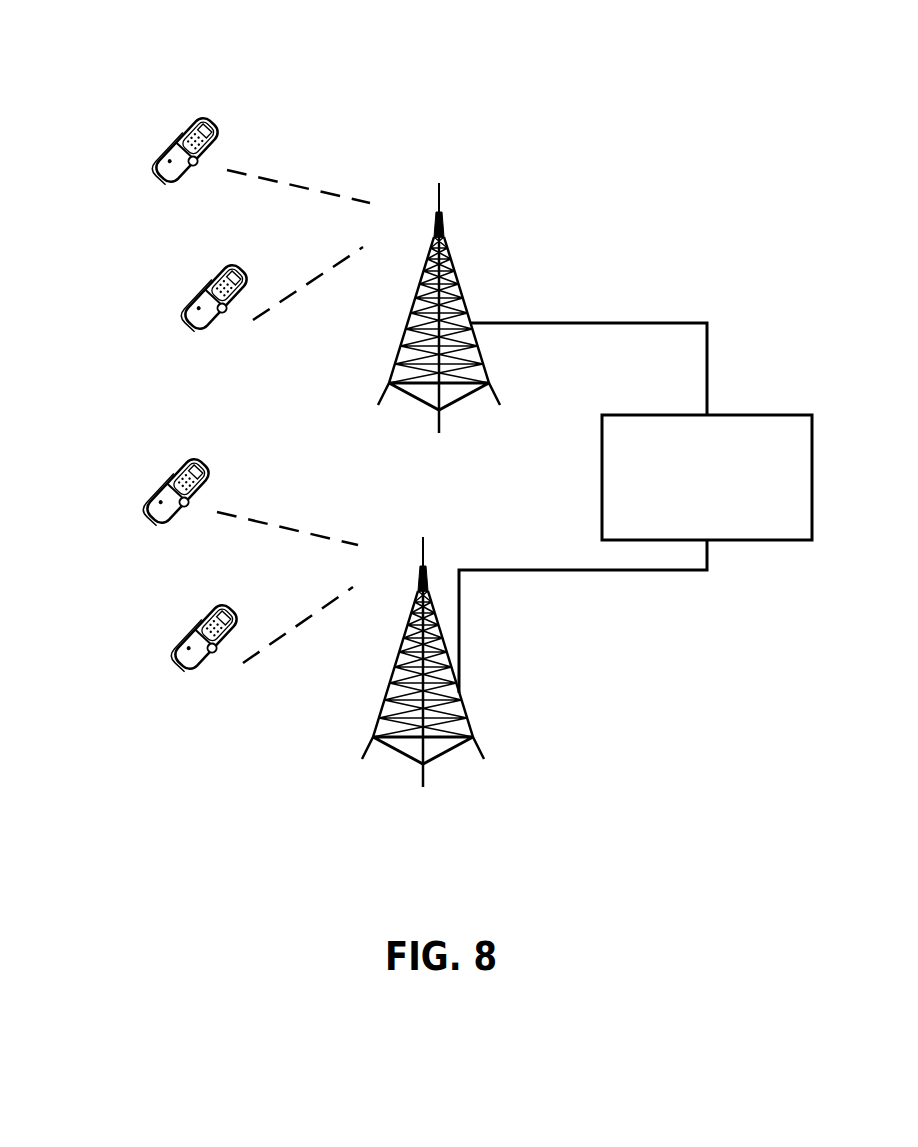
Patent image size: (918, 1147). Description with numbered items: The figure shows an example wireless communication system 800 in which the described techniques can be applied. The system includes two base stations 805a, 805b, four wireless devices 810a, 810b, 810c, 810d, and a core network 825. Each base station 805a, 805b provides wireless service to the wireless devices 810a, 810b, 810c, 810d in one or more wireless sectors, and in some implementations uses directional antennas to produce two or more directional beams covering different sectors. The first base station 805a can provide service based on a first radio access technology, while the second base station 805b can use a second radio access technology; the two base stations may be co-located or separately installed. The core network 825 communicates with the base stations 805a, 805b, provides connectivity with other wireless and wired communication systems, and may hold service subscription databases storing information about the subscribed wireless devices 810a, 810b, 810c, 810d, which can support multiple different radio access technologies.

The wireless communication system 800 is at (72, 40).
The first base station 805a is at (452, 264).
The second base station 805b is at (432, 577).
The wireless device 810a is at (183, 121).
The wireless device 810b is at (212, 270).
The wireless device 810c is at (125, 487).
The wireless device 810d is at (205, 612).
The core network 825 is at (618, 415).